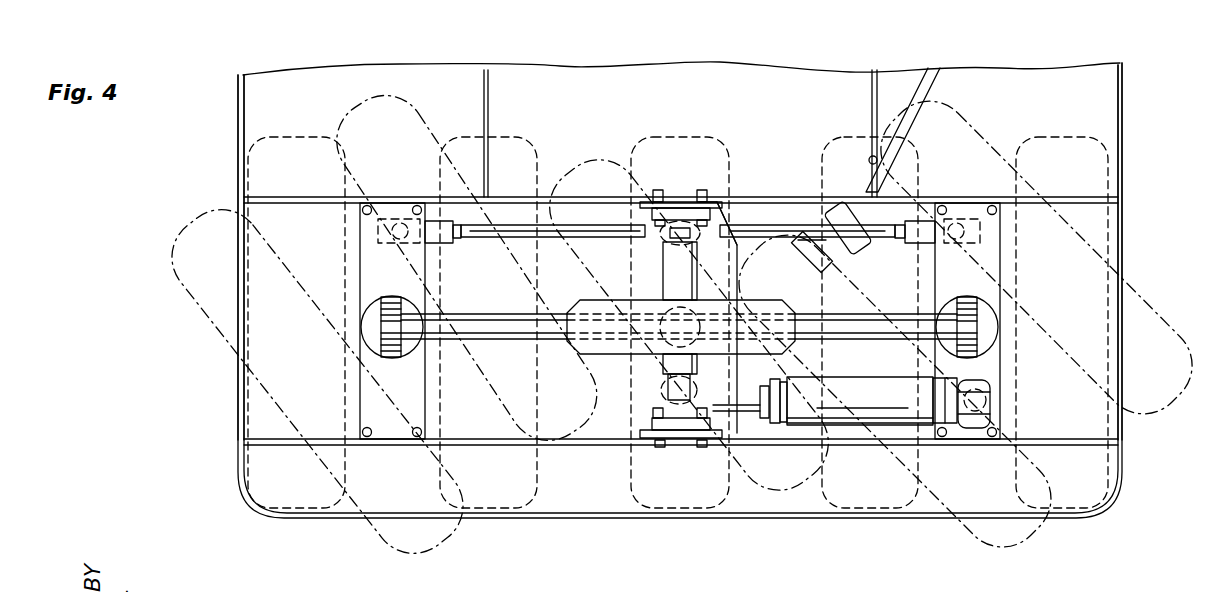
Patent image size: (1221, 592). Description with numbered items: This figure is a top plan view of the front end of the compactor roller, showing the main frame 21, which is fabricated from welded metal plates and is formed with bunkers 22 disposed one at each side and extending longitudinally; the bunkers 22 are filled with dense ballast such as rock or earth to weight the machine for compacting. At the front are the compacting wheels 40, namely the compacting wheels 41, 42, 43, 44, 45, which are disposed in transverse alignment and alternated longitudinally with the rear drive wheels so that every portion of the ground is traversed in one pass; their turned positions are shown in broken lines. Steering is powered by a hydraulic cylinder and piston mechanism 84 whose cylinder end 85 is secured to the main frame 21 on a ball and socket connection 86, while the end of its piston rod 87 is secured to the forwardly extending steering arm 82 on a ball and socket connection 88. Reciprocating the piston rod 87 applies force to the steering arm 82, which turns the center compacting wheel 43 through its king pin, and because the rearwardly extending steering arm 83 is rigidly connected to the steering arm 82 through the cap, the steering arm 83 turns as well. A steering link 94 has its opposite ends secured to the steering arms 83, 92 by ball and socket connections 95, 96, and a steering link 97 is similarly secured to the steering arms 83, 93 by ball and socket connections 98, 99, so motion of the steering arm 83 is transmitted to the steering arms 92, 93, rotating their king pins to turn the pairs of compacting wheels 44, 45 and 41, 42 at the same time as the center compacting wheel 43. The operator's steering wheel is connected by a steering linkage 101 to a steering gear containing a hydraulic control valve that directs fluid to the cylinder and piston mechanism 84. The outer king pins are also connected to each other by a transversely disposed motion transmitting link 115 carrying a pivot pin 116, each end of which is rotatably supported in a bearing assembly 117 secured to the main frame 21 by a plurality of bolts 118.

The main frame 21 is at (1134, 76).
The bunkers 22 is at (255, 112).
The compacting wheels 40 is at (230, 494).
The compacting wheel 41 is at (292, 136).
The compacting wheel 42 is at (510, 136).
The center compacting wheel 43 is at (710, 140).
The compacting wheel 44 is at (838, 146).
The compacting wheel 45 is at (1052, 146).
The steering arm 82 is at (738, 366).
The steering arm 83 is at (703, 273).
The cylinder and piston mechanism 84 is at (858, 446).
The cylinder end 85 is at (995, 384).
The ball and socket connection 86 is at (978, 400).
The piston rod 87 is at (746, 411).
The ball and socket connection 88 is at (662, 398).
The steering arm 92 is at (985, 262).
The steering arm 93 is at (375, 272).
The steering link 94 is at (868, 238).
The ball and socket connection 95 is at (718, 226).
The ball and socket connection 96 is at (955, 222).
The steering link 97 is at (568, 228).
The ball and socket connection 98 is at (655, 232).
The ball and socket connection 99 is at (397, 222).
The steering linkage 101 is at (920, 98).
The motion transmitting link 115 is at (522, 318).
The pivot pin 116 is at (670, 283).
The bearing assembly 117 is at (681, 208).
The bolts 118 is at (656, 190).